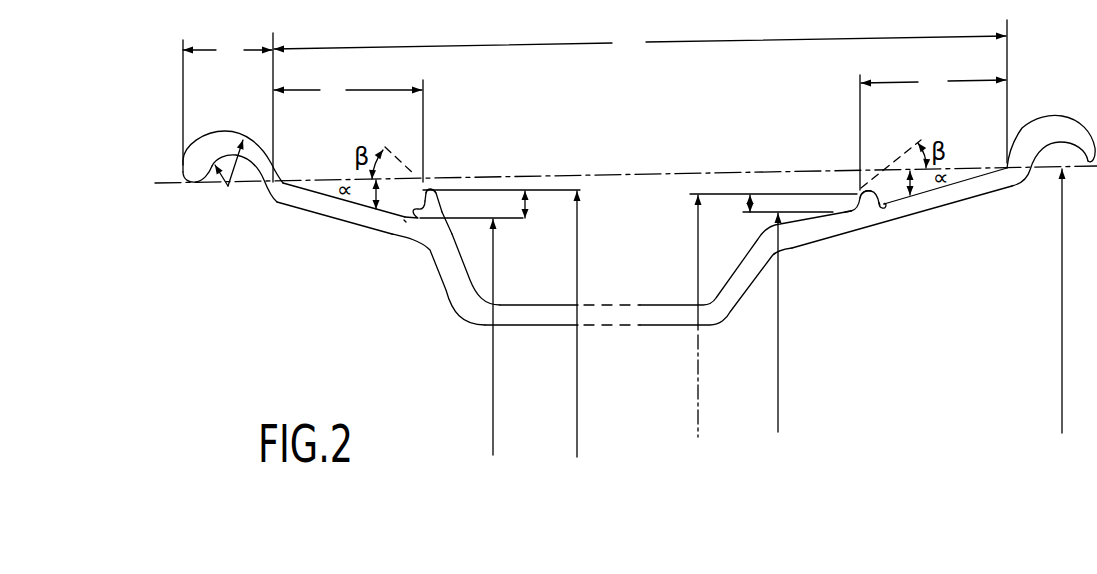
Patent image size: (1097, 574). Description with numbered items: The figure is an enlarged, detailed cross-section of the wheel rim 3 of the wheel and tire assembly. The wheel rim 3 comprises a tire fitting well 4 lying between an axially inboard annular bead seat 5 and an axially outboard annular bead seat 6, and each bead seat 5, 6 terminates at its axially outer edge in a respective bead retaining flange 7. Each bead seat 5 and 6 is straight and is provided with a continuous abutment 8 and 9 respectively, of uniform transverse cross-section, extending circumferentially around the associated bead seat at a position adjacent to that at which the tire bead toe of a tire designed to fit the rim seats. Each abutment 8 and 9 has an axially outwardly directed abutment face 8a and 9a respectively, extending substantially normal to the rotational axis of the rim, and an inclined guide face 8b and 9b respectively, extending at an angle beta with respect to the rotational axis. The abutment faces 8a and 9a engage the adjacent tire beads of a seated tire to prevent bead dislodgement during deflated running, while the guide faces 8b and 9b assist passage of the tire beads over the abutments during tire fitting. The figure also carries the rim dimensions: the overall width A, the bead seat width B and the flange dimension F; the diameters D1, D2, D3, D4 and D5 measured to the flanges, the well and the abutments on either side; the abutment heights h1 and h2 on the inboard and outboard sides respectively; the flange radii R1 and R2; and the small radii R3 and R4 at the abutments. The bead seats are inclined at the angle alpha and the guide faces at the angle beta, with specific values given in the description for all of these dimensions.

The wheel rim 3 is at (383, 293).
The tire fitting well 4 is at (667, 303).
The inboard annular bead seat 5 is at (963, 180).
The outboard annular bead seat 6 is at (304, 189).
The bead retaining flange 7 is at (274, 199).
The abutment 8 is at (854, 206).
The abutment face 8a is at (886, 205).
The inclined guide face 8b is at (856, 203).
The abutment 9 is at (438, 213).
The abutment face 9a is at (404, 220).
The inclined guide face 9b is at (441, 212).
The flange radius R1 is at (242, 140).
The flange radius R2 is at (229, 188).
The abutment radius R3 is at (431, 189).
The abutment radius R4 is at (879, 205).
The rim diameter D1 is at (1063, 333).
The rim diameter D2 is at (700, 349).
The rim diameter D3 is at (783, 355).
The rim diameter D4 is at (580, 347).
The rim diameter D5 is at (499, 361).
The abutment height h1 is at (773, 208).
The abutment height h2 is at (530, 220).
The rim width A is at (640, 91).
The bead seat width B is at (640, 129).
The flange dimension F is at (228, 107).